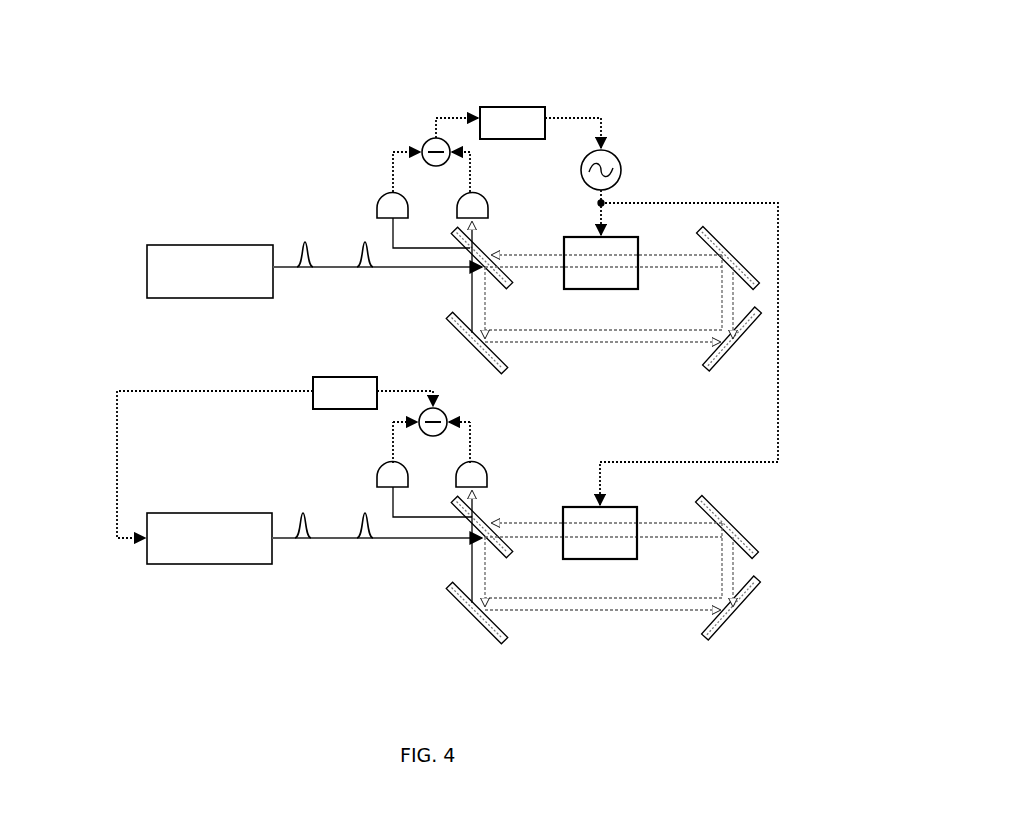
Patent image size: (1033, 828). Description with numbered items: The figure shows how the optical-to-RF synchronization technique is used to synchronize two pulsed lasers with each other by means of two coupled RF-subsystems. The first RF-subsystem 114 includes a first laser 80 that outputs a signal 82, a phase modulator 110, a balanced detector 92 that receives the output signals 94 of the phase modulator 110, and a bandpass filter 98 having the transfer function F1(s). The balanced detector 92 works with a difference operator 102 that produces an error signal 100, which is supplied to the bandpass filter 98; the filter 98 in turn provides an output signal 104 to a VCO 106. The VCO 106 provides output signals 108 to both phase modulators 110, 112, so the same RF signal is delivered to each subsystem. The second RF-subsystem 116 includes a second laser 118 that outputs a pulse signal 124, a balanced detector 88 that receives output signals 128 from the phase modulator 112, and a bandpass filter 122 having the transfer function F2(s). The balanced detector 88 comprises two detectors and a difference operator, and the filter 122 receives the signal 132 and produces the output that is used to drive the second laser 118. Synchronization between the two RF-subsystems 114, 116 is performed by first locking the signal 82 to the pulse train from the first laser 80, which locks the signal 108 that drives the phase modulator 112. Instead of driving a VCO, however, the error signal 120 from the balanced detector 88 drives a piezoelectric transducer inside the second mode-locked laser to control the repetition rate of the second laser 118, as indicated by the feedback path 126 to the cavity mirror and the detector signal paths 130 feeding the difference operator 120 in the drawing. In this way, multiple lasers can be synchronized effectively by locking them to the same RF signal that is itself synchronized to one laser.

The first laser 80 is at (170, 244).
The signal 82 is at (333, 262).
The balanced detector 88 is at (468, 489).
The balanced detector 92 is at (390, 214).
The output signals 94 is at (460, 212).
The bandpass filter 98 is at (505, 105).
The error signal 100 is at (448, 116).
The difference operator 102 is at (425, 140).
The output signal 104 is at (574, 114).
The VCO 106 is at (622, 150).
The output signals 108 is at (604, 217).
The phase modulator 110 is at (620, 228).
The phase modulator 112 is at (571, 506).
The first RF-subsystem 114 is at (243, 72).
The second RF-subsystem 116 is at (58, 370).
The second laser 118 is at (170, 566).
The error signal 120 is at (450, 410).
The bandpass filter 122 is at (310, 382).
The pulse signal 124 is at (320, 544).
The feedback path to PZT-mounted cavity mirror 126 is at (114, 485).
The output signals 128 is at (434, 519).
The balanced detector signal paths to subtractor 130 is at (468, 437).
The signal 132 is at (442, 393).